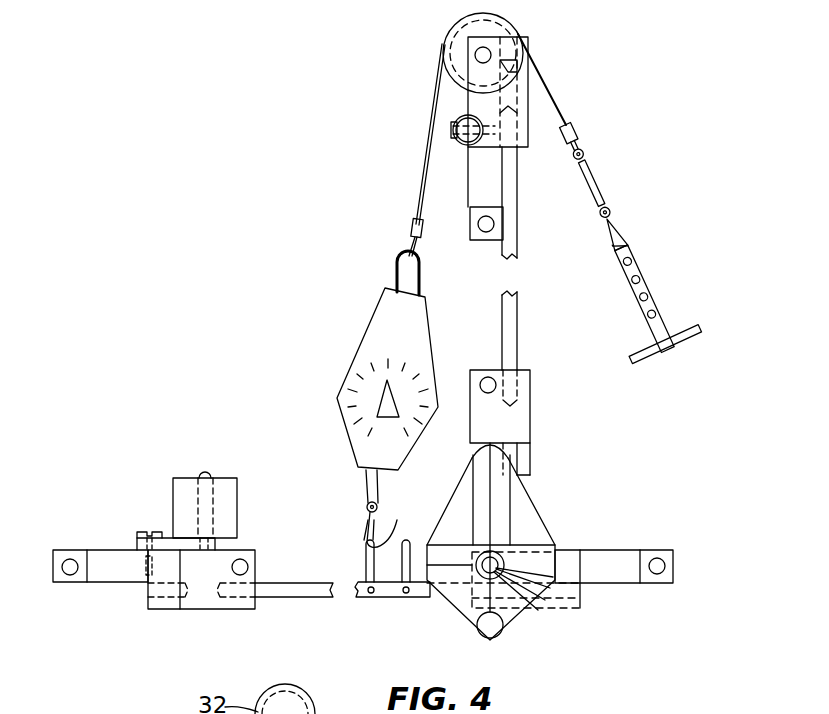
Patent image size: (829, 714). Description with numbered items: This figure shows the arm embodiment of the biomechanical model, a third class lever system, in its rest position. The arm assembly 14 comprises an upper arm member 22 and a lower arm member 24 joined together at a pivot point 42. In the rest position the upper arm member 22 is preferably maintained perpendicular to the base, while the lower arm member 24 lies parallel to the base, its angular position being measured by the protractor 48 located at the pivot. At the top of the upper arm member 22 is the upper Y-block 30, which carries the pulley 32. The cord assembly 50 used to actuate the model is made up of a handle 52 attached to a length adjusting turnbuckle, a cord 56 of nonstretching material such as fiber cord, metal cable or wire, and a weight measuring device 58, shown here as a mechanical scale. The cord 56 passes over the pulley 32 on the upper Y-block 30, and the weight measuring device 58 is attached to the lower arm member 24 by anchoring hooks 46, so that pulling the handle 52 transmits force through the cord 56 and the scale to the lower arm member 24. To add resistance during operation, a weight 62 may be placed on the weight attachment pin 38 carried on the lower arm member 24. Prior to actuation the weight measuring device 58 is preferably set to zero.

The arm assembly 14 is at (645, 490).
The upper arm member 22 is at (560, 405).
The lower arm member 24 is at (390, 603).
The upper Y-block 30 is at (527, 140).
The pulley 32 is at (520, 20).
The weight attachment pin 38 is at (178, 483).
The pivot point 42 is at (515, 543).
The anchoring hooks 46 is at (388, 536).
The protractor 48 is at (470, 630).
The cord assembly 50 is at (383, 158).
The handle 52 is at (660, 300).
The cord 56 is at (433, 113).
The weight measuring device 58 is at (428, 340).
The weight 62 is at (228, 480).